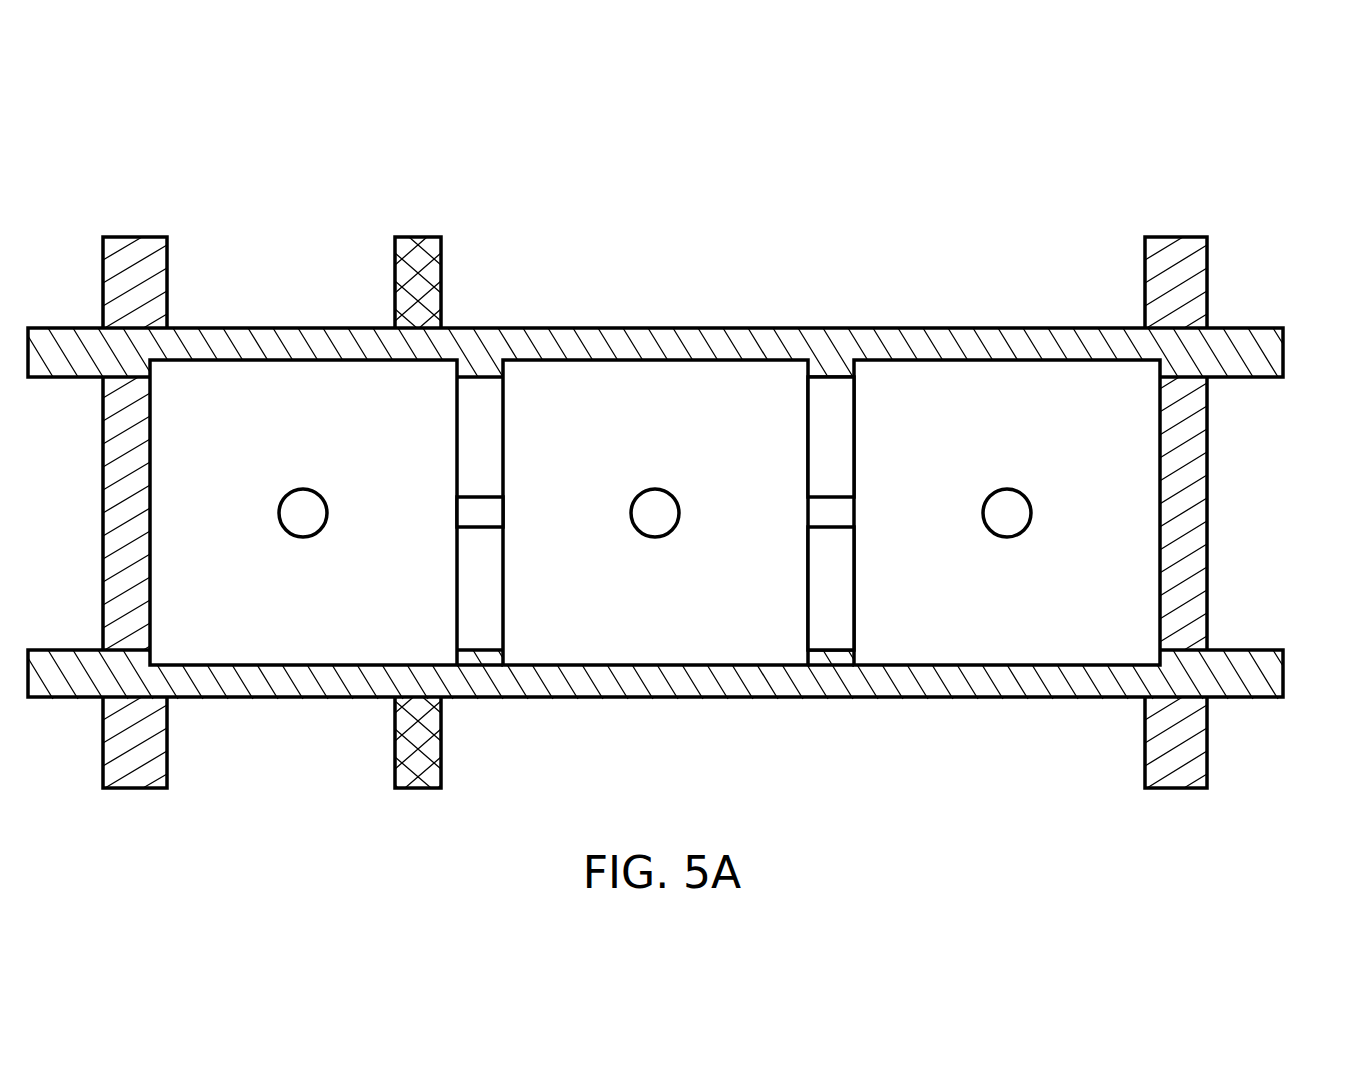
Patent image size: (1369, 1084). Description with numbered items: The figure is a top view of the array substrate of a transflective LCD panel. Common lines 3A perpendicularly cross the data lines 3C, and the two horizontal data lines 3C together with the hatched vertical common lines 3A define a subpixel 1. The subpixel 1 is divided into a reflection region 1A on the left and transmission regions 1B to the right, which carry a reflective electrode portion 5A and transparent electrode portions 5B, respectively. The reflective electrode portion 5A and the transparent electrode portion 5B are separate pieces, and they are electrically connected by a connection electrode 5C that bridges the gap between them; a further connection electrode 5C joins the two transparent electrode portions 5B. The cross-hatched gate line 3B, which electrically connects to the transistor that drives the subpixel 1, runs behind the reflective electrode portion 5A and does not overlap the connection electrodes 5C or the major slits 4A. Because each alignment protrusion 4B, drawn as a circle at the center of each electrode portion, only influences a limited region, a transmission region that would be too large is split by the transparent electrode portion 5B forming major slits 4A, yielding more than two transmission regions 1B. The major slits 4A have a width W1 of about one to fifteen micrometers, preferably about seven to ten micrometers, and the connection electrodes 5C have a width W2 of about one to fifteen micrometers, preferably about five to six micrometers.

The subpixel 1 is at (303, 155).
The reflection region 1A is at (457, 218).
The transmission region 1B is at (808, 218).
The common line 3A is at (135, 776).
The gate line 3B is at (418, 776).
The data line 3C is at (1268, 353).
The major slit 4A is at (481, 637).
The alignment protrusion 4B is at (301, 518).
The reflective electrode portion 5A is at (300, 392).
The transparent electrode portion 5B is at (652, 392).
The connection electrode 5C is at (478, 515).
The width of the major slits W1 is at (457, 588).
The width of the connection electrodes W2 is at (548, 460).